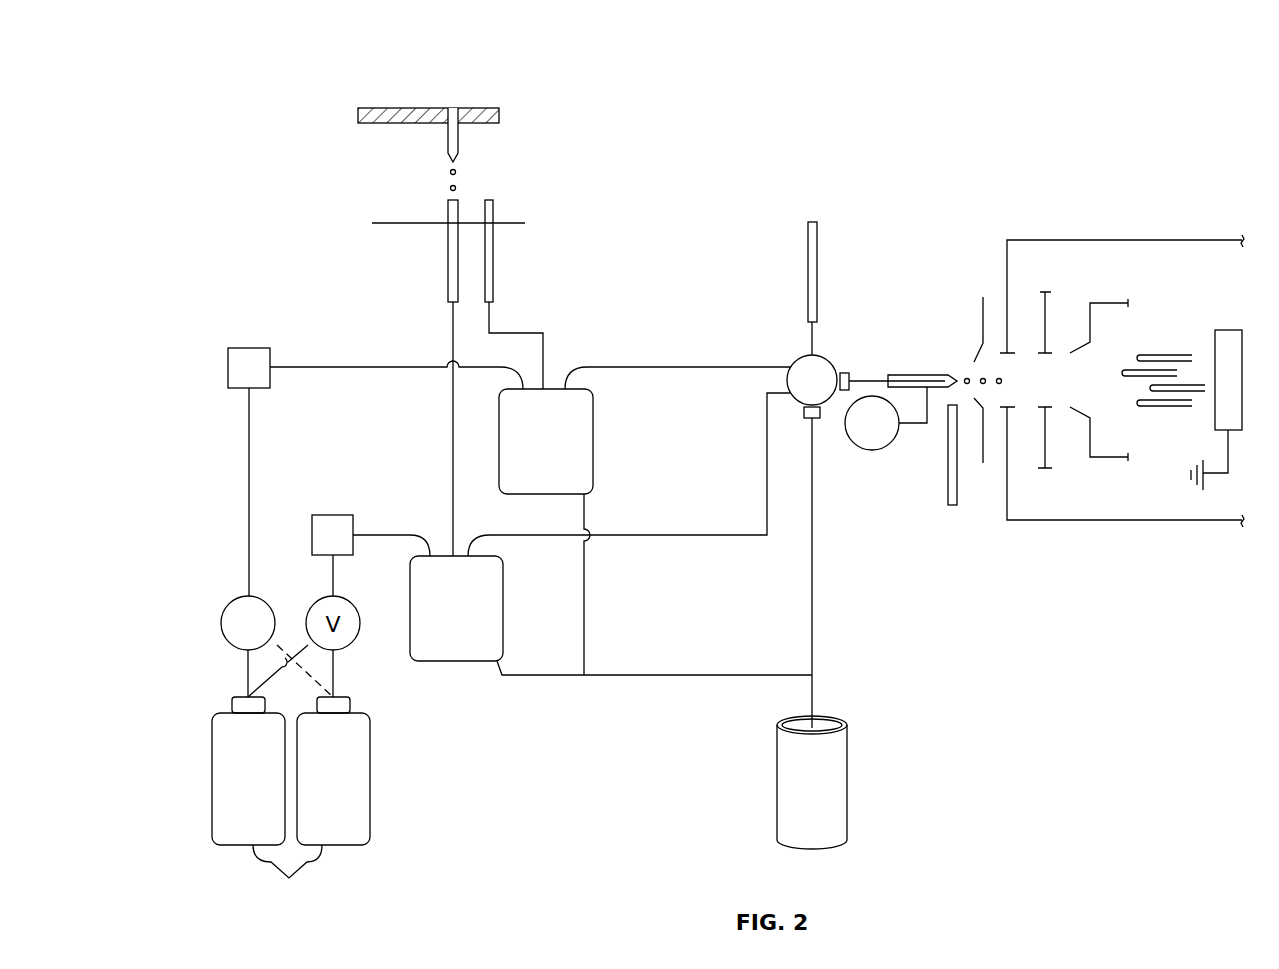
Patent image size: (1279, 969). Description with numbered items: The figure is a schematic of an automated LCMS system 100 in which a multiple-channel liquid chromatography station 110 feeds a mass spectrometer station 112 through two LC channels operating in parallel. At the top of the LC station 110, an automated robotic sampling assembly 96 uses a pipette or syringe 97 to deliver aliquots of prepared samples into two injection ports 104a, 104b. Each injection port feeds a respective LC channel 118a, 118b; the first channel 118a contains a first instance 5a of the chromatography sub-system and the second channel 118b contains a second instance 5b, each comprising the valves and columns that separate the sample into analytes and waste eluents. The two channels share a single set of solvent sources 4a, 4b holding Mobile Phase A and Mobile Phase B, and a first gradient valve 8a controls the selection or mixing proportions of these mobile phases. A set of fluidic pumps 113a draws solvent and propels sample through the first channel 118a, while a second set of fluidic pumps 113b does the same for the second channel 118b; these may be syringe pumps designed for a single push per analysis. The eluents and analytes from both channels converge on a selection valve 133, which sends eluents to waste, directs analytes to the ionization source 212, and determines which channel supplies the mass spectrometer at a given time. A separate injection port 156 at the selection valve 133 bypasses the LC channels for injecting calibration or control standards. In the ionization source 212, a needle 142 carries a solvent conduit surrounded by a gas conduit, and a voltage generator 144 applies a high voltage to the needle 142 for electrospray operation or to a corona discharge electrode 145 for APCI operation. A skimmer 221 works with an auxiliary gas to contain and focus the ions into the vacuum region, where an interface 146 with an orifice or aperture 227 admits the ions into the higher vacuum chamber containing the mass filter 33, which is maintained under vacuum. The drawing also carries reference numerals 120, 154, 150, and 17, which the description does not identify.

The LCMS system 100 is at (708, 175).
The liquid chromatography station 110 is at (303, 188).
The mass spectrometer station 112 is at (1153, 187).
The automated robotic sampling assembly 96 is at (483, 140).
The pipette or syringe 97 is at (446, 150).
The injection port 104a is at (447, 265).
The injection port 104b is at (494, 262).
The set of fluidic pumps 113a is at (333, 515).
The set of fluidic pumps 113b is at (249, 348).
The chromatography sub-system 5a is at (445, 556).
The chromatography sub-system 5b is at (552, 389).
The LC channel 118a is at (606, 607).
The LC channel 118b is at (615, 272).
The first gradient valve 8a is at (228, 600).
The solvent source 4a is at (212, 723).
The solvent source 4b is at (370, 723).
The selection valve 133 is at (800, 358).
The injection port 156 is at (808, 262).
The needle 142 is at (927, 373).
The ionization source 212 is at (897, 355).
The voltage generator 144 is at (868, 452).
The corona discharge electrode 145 is at (952, 505).
The skimmer 221 is at (980, 310).
The vacuum chamber 120 is at (1088, 240).
The interface 146 is at (1040, 310).
The orifice or aperture 227 is at (1047, 407).
The skimmer 154 is at (1112, 300).
The mass filter 33 is at (1170, 338).
The detector 150 is at (1215, 410).
The waste container 17 is at (777, 775).